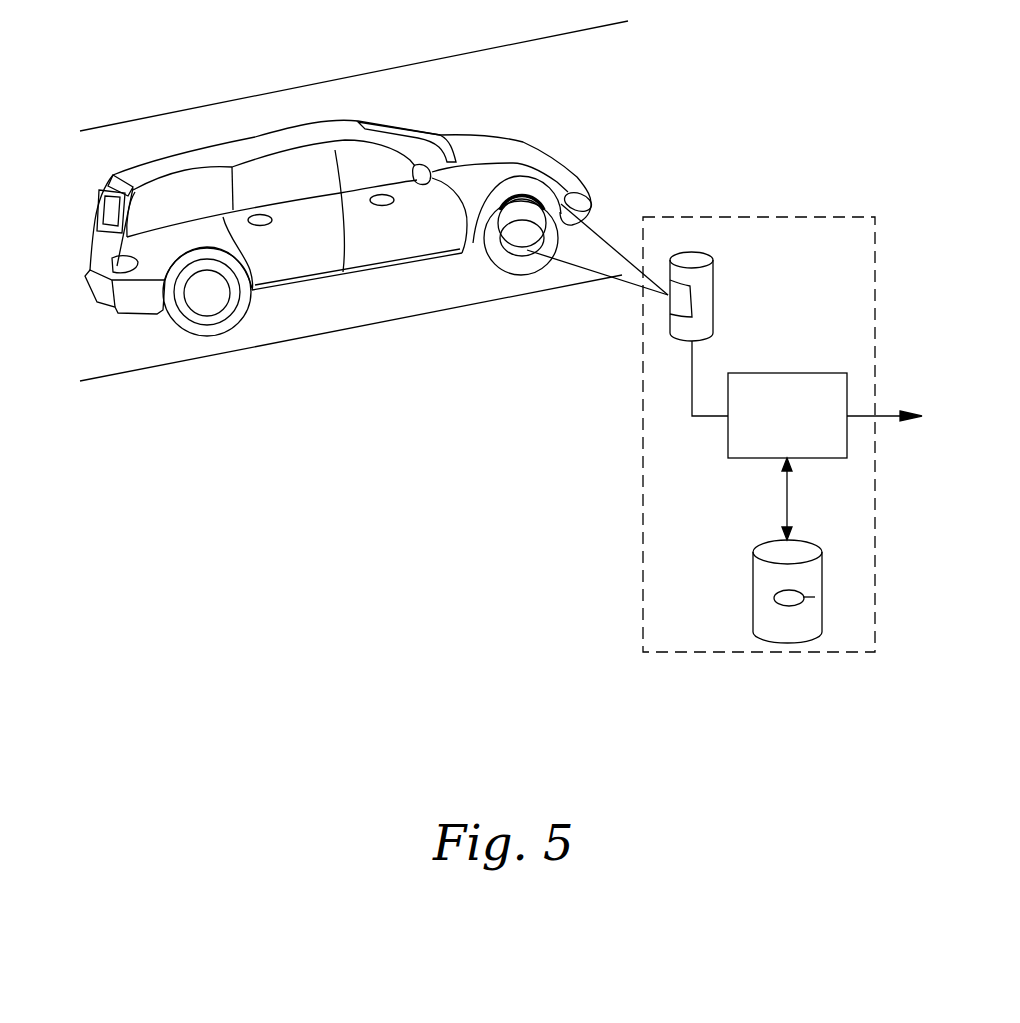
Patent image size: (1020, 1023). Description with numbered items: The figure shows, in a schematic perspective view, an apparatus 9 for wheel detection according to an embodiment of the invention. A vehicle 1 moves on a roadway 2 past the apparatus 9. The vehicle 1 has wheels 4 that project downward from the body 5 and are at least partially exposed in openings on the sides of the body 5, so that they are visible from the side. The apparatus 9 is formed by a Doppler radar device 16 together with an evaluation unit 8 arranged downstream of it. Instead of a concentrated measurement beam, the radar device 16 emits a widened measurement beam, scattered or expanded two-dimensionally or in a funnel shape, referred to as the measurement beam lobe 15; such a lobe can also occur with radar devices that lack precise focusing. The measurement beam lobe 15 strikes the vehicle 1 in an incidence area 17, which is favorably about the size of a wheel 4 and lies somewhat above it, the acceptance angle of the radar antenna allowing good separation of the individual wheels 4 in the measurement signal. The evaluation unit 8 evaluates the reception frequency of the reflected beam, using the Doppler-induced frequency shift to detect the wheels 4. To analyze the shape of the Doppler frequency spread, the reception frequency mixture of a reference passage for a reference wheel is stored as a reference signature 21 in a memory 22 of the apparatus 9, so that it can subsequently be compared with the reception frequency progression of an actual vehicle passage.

The vehicle 1 is at (258, 140).
The roadway 2 is at (120, 345).
The wheels 4 is at (205, 295).
The body 5 is at (293, 252).
The evaluation unit 8 is at (770, 372).
The apparatus 9 is at (851, 216).
The measurement beam lobe 15 is at (606, 254).
The Doppler radar device 16 is at (713, 295).
The incidence area 17 is at (524, 200).
The reference signature 21 is at (789, 597).
The memory 22 is at (770, 570).